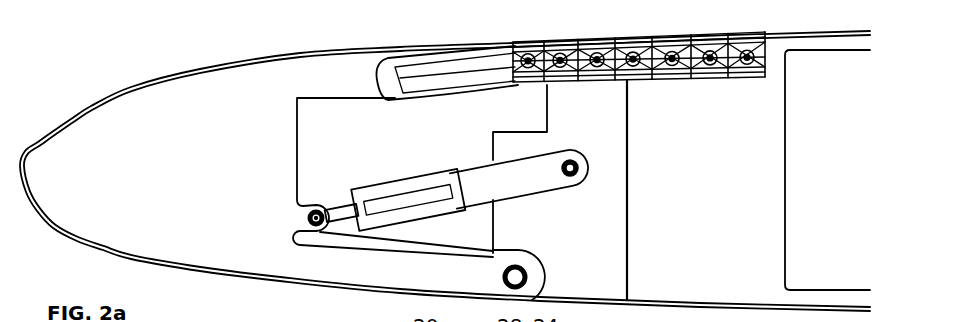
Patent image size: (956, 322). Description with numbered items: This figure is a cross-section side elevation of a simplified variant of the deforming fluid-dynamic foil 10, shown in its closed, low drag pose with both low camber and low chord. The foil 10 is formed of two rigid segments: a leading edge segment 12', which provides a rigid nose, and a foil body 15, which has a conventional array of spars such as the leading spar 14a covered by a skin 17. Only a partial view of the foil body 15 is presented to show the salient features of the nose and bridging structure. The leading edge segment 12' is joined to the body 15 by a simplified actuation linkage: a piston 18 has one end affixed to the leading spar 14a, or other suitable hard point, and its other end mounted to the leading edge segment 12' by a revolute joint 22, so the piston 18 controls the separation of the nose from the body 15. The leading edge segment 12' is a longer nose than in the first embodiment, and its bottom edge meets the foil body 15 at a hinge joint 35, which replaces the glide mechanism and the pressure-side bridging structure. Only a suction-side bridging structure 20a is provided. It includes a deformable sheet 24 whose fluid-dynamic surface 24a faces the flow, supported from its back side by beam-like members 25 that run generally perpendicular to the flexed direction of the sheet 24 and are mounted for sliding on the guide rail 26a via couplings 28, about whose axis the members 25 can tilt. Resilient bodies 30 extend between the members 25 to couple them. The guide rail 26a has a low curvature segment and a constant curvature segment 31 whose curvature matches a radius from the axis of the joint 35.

The deforming fluid-dynamic foil 10 is at (86, 46).
The leading edge segment 12' is at (99, 183).
The leading spar 14a is at (713, 236).
The foil body 15 is at (847, 183).
The skin 17 is at (745, 302).
The piston 18 is at (517, 183).
The suction-side bridging structure 20a is at (547, 18).
The revolute joint 22 is at (305, 211).
The deformable sheet 24 is at (690, 33).
The fluid-dynamic surface 24a is at (521, 26).
The members 25 is at (707, 44).
The guide rail 26a is at (393, 97).
The couplings 28 is at (633, 62).
The resilient bodies 30 is at (612, 42).
The constant curvature segment 31 is at (385, 64).
The joint 35 is at (503, 273).